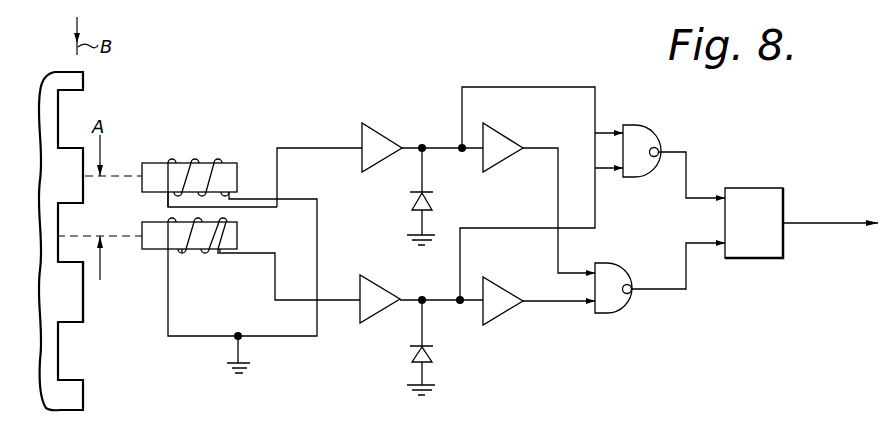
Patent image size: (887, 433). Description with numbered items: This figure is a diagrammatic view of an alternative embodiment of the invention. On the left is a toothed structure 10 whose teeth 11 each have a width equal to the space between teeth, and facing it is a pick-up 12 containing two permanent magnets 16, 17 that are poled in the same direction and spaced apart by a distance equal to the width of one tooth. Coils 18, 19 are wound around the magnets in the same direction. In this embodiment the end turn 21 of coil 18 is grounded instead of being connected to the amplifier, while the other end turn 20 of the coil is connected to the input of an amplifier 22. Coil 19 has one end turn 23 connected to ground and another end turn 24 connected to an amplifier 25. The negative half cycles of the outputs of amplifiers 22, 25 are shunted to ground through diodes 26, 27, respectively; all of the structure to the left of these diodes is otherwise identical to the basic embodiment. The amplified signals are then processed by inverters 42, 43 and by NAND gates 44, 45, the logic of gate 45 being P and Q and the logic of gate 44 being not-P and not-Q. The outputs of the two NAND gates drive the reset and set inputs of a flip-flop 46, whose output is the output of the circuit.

The structure 10 is at (43, 72).
The teeth 11 is at (78, 305).
The pick-up 12 is at (203, 125).
The permanent magnet 16 is at (152, 163).
The permanent magnet 17 is at (220, 252).
The coil 18 is at (197, 163).
The coil 19 is at (182, 252).
The end turn 20 is at (167, 205).
The end turn 21 is at (249, 198).
The amplifier 22 is at (369, 135).
The end turn 23 is at (168, 290).
The end turn 24 is at (257, 253).
The amplifier 25 is at (372, 253).
The diode 26 is at (445, 201).
The diode 27 is at (446, 353).
The inverter 42 is at (508, 137).
The inverter 43 is at (494, 283).
The NAND gate 44 is at (643, 131).
The NAND gate 45 is at (618, 266).
The flip-flop 46 is at (761, 188).